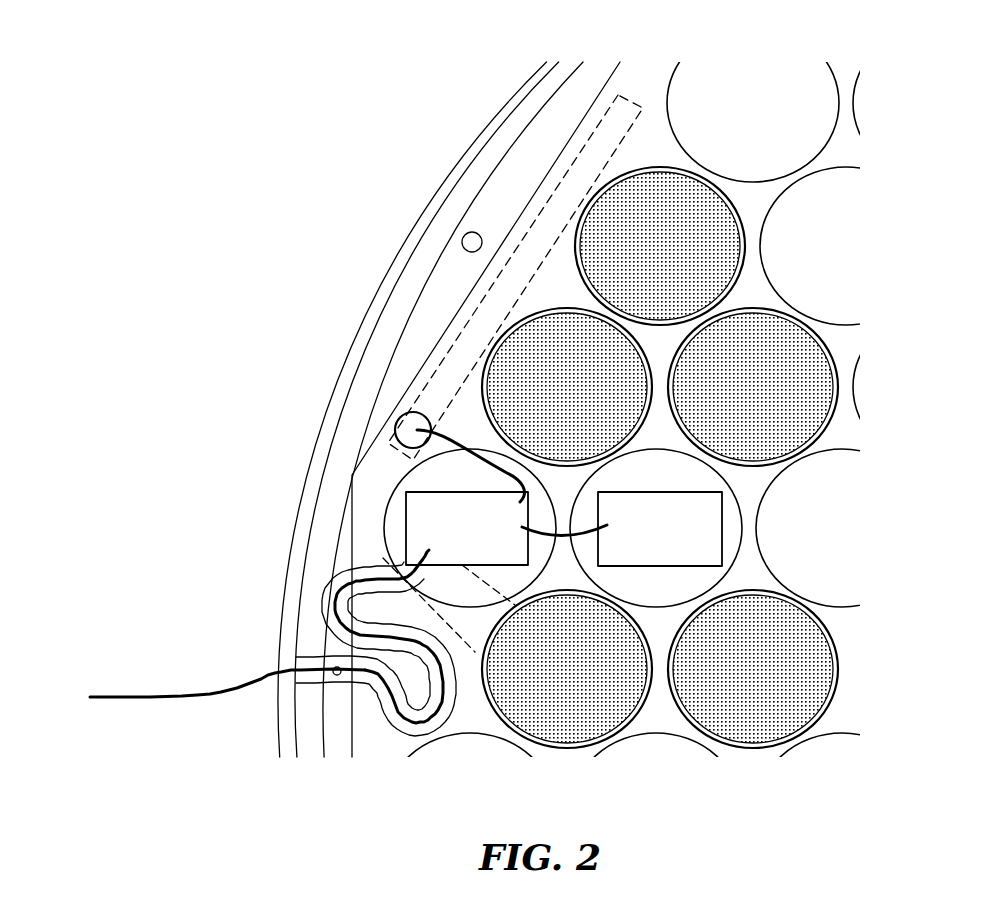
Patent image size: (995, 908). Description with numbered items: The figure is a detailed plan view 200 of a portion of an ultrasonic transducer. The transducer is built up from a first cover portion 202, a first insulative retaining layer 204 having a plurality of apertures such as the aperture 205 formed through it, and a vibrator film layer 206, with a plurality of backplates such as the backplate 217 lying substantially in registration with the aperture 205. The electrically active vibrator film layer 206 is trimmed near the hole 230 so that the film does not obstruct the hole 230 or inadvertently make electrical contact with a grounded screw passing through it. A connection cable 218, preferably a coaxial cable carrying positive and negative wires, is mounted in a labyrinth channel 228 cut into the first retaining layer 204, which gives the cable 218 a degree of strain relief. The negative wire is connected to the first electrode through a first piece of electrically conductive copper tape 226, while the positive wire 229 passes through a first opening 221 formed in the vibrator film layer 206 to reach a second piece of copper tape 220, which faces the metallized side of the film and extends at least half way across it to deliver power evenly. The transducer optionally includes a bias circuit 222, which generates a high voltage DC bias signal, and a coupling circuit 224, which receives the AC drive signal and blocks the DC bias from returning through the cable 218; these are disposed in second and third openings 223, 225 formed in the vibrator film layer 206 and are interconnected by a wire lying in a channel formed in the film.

The detailed view of the ultrasonic transducer 200 is at (288, 140).
The first cover portion 202 is at (525, 92).
The first insulative retaining layer 204 is at (512, 120).
The vibrator film layer 206 is at (530, 200).
The aperture 205 is at (442, 333).
The second piece of copper tape 220 is at (505, 345).
The hole 230 is at (462, 232).
The backplate 217 is at (553, 353).
The positive wire 229 is at (503, 450).
The second opening 223 is at (735, 490).
The first opening 221 is at (400, 414).
The third opening 225 is at (478, 452).
The coupling circuit 224 is at (405, 523).
The bias circuit 222 is at (722, 535).
The connection cable 218 is at (260, 706).
The first piece of electrically conductive tape 226 is at (458, 595).
The labyrinth channel 228 is at (295, 655).